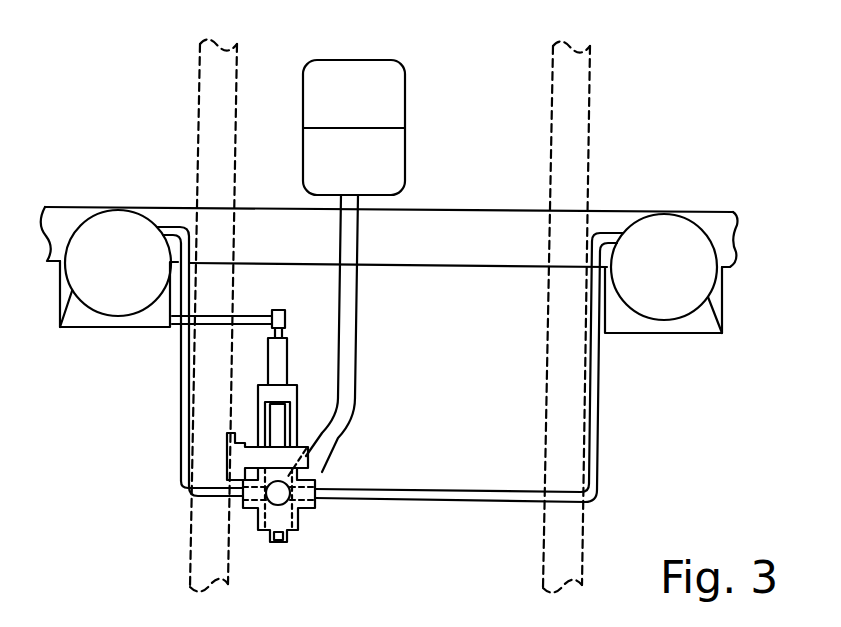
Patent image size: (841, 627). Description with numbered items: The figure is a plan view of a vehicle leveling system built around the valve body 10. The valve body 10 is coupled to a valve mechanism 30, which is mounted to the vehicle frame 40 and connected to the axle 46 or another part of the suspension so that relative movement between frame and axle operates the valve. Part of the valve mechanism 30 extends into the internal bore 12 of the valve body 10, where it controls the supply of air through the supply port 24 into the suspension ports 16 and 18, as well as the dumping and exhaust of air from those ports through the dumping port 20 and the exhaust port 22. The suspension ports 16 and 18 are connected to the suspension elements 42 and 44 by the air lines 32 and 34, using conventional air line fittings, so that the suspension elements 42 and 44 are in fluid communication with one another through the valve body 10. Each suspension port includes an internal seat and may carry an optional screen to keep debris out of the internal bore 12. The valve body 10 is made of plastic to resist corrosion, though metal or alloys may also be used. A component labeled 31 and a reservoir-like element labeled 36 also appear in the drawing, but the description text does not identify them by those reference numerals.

The valve body 10 is at (289, 530).
The internal bore 12 is at (264, 517).
The suspension port 16 is at (243, 497).
The suspension port 18 is at (322, 486).
The dumping port 20 is at (323, 456).
The exhaust port 22 is at (281, 542).
The supply port 24 is at (294, 503).
The valve mechanism 30 is at (297, 402).
The actuator connector 31 is at (282, 309).
The air line 32 is at (181, 345).
The air line 34 is at (598, 402).
The reservoir 36 is at (405, 155).
The vehicle frame 40 is at (218, 112).
The suspension element 42 is at (60, 327).
The suspension element 44 is at (722, 333).
The axle 46 is at (86, 327).